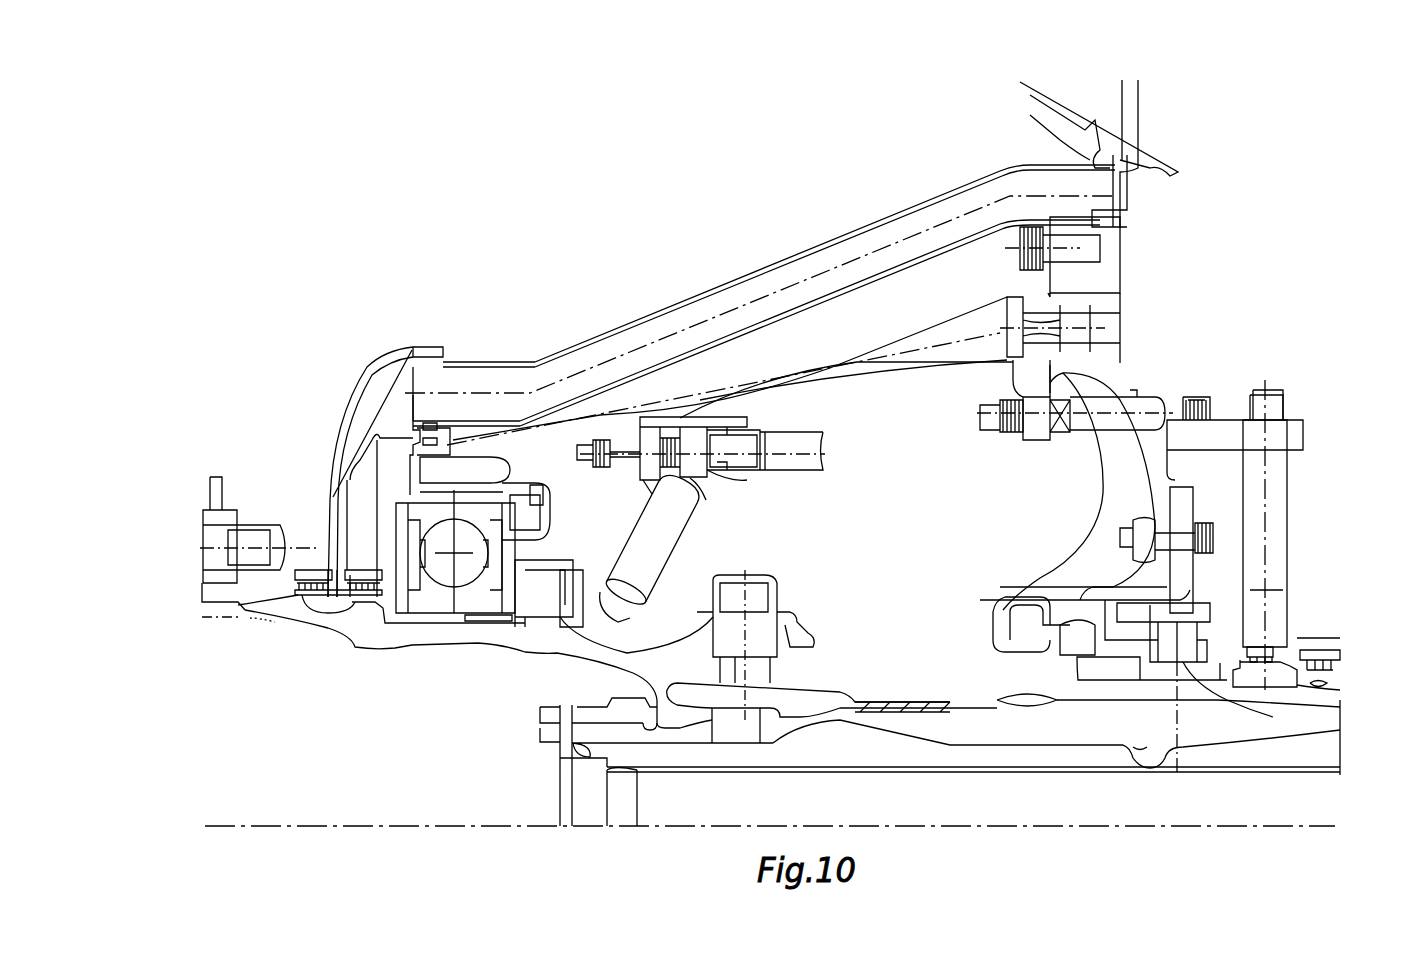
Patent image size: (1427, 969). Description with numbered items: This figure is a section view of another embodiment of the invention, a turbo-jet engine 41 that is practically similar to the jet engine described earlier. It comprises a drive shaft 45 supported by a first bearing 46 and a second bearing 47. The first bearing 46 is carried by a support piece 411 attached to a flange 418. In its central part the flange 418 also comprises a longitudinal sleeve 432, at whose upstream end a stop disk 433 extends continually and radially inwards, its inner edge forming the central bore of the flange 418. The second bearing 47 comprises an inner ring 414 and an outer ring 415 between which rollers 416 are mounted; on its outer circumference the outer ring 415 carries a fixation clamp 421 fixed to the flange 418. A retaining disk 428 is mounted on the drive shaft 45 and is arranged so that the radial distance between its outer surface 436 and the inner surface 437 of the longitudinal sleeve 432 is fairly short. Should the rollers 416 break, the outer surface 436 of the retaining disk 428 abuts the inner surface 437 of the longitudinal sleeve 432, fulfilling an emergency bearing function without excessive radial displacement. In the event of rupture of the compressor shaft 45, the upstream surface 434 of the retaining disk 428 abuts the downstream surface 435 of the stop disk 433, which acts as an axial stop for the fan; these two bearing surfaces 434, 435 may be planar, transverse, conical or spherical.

The turbo-jet engine 41 is at (652, 253).
The support piece 411 is at (748, 382).
The inner ring 414 is at (1200, 670).
The outer ring 415 is at (1200, 613).
The rollers 416 is at (1340, 707).
The flange 418 is at (1082, 282).
The fixation clamp 421 is at (1183, 520).
The retaining disk 428 is at (1107, 650).
The longitudinal sleeve 432 is at (1097, 595).
The stop disk 433 is at (1023, 607).
The upstream surface 434 is at (1073, 603).
The downstream surface 435 is at (1090, 657).
The outer surface 436 is at (1085, 593).
The inner surface 437 is at (1080, 598).
The drive shaft 45 is at (553, 645).
The first bearing 46 is at (397, 468).
The second bearing 47 is at (1213, 637).